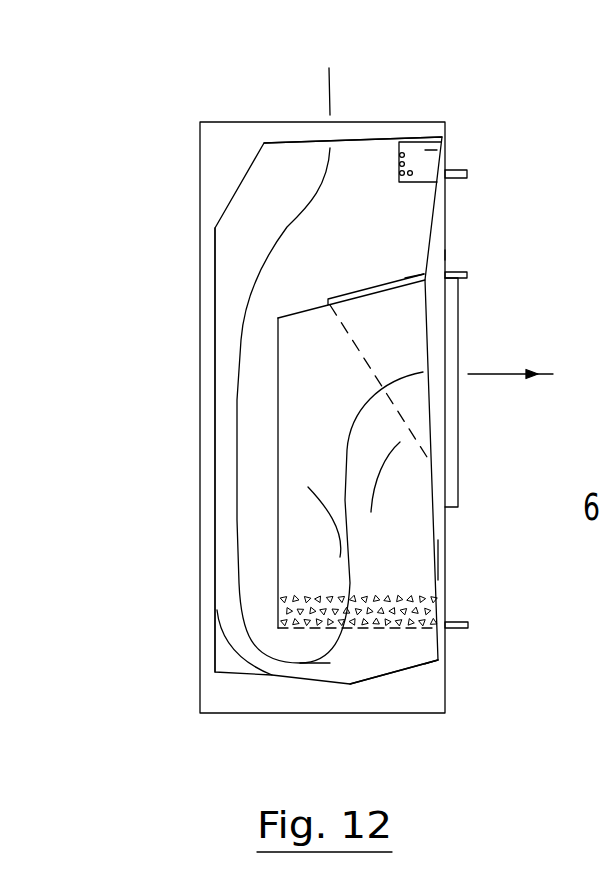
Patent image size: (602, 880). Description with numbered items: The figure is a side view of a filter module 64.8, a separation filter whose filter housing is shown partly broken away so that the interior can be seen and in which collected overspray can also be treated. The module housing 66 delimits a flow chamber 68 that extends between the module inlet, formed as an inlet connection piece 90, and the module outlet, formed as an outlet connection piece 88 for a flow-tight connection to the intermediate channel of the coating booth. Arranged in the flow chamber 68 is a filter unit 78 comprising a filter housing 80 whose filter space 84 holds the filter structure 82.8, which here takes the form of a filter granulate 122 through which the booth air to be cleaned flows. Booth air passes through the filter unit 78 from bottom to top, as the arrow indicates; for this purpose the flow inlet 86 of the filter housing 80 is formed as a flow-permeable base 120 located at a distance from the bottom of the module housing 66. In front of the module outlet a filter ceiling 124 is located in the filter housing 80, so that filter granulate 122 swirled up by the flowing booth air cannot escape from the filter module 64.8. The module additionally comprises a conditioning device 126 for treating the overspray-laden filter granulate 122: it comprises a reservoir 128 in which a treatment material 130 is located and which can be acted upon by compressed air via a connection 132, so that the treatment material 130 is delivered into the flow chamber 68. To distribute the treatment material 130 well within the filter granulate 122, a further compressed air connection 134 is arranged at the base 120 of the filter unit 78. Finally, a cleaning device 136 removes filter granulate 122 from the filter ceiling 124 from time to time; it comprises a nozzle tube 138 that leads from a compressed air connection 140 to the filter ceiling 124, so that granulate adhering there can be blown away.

The inlet connection piece 90 is at (242, 112).
The module housing 66 is at (441, 137).
The filter module 64.8 is at (403, 133).
The treatment material 130 is at (397, 163).
The reservoir 128 is at (430, 163).
The conditioning device 126 is at (515, 130).
The connection 132 is at (460, 177).
The cleaning device 136 is at (463, 247).
The compressed air connection 140 is at (463, 273).
The outlet connection piece 88 is at (455, 334).
The filter ceiling 124 is at (351, 338).
The nozzle tube 138 is at (413, 272).
The filter unit 78 is at (262, 379).
The filter housing 80 is at (277, 418).
The flow chamber 68 is at (225, 485).
The filter space 84 is at (417, 560).
The filter structure 82.8 is at (444, 602).
The further compressed air connection 134 is at (468, 625).
The flow inlet 86 is at (437, 663).
The filter granulate 122 is at (372, 632).
The flow-permeable base 120 is at (382, 632).